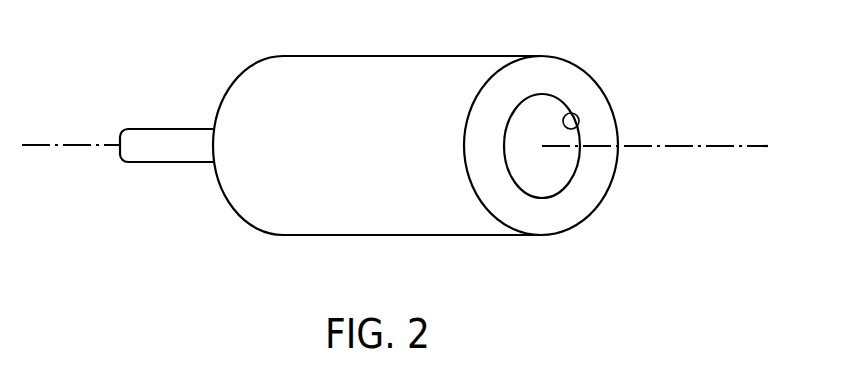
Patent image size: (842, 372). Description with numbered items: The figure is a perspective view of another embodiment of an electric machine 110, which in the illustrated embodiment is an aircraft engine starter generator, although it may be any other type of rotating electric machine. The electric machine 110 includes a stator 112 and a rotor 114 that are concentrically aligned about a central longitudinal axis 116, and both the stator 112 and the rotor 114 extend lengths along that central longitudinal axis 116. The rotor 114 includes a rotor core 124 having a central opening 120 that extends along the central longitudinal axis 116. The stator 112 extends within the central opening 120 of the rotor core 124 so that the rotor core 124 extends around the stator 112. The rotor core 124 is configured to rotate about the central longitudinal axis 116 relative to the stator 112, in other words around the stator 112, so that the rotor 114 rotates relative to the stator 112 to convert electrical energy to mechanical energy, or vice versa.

The electric machine 110 is at (220, 52).
The stator 112 is at (566, 187).
The rotor 114 is at (592, 75).
The central longitudinal axis 116 is at (728, 143).
The central opening 120 is at (579, 126).
The rotor core 124 is at (525, 218).